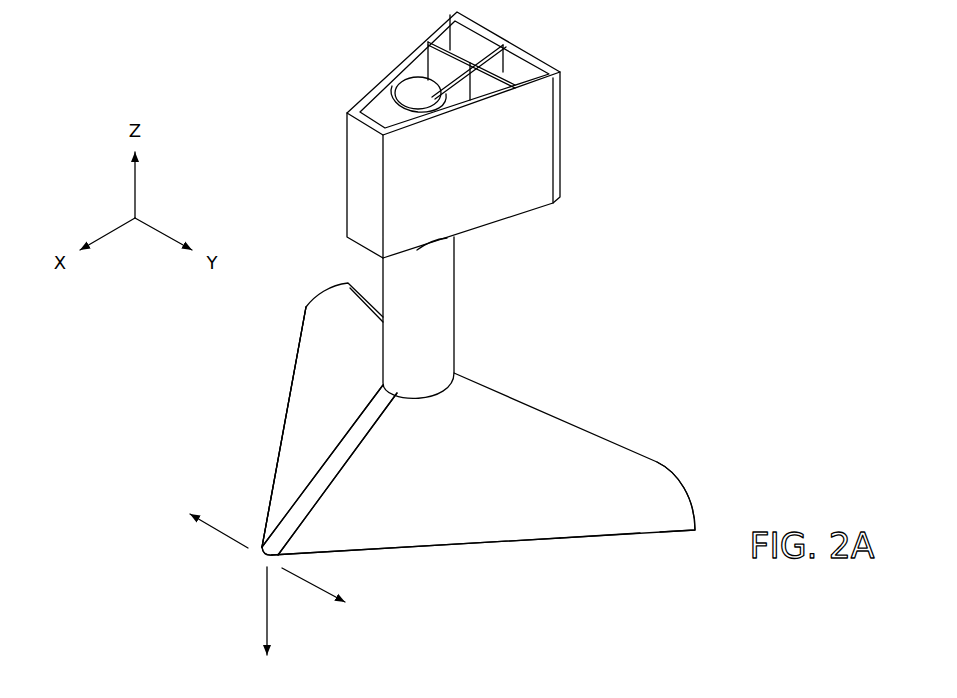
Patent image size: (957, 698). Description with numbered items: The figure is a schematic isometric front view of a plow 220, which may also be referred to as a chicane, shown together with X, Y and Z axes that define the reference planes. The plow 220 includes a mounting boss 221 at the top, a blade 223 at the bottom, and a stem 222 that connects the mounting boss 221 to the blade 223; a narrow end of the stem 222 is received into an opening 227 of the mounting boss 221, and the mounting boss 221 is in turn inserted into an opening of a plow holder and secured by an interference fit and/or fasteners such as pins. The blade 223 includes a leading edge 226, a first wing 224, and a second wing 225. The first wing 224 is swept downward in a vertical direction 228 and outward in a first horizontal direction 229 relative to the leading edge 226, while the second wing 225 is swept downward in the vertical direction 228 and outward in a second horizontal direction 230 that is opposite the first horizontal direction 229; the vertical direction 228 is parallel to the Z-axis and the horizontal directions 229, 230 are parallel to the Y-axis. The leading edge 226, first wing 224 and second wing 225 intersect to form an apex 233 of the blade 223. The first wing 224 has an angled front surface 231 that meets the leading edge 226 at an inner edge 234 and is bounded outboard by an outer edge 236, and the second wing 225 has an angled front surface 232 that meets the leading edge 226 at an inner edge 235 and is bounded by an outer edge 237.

The plow 220 is at (236, 400).
The mounting boss 221 is at (504, 135).
The stem 222 is at (428, 292).
The blade 223 is at (496, 494).
The first wing 224 is at (280, 434).
The second wing 225 is at (435, 549).
The leading edge 226 is at (330, 475).
The opening 227 is at (415, 90).
The vertical direction 228 is at (263, 595).
The first horizontal direction 229 is at (217, 533).
The second horizontal direction 230 is at (300, 582).
The angled front surface 231 is at (278, 415).
The angled front surface 232 is at (652, 502).
The apex 233 is at (260, 555).
The inner edge 234 is at (357, 457).
The inner edge 235 is at (370, 442).
The outer edge 236 is at (290, 383).
The outer edge 237 is at (593, 538).